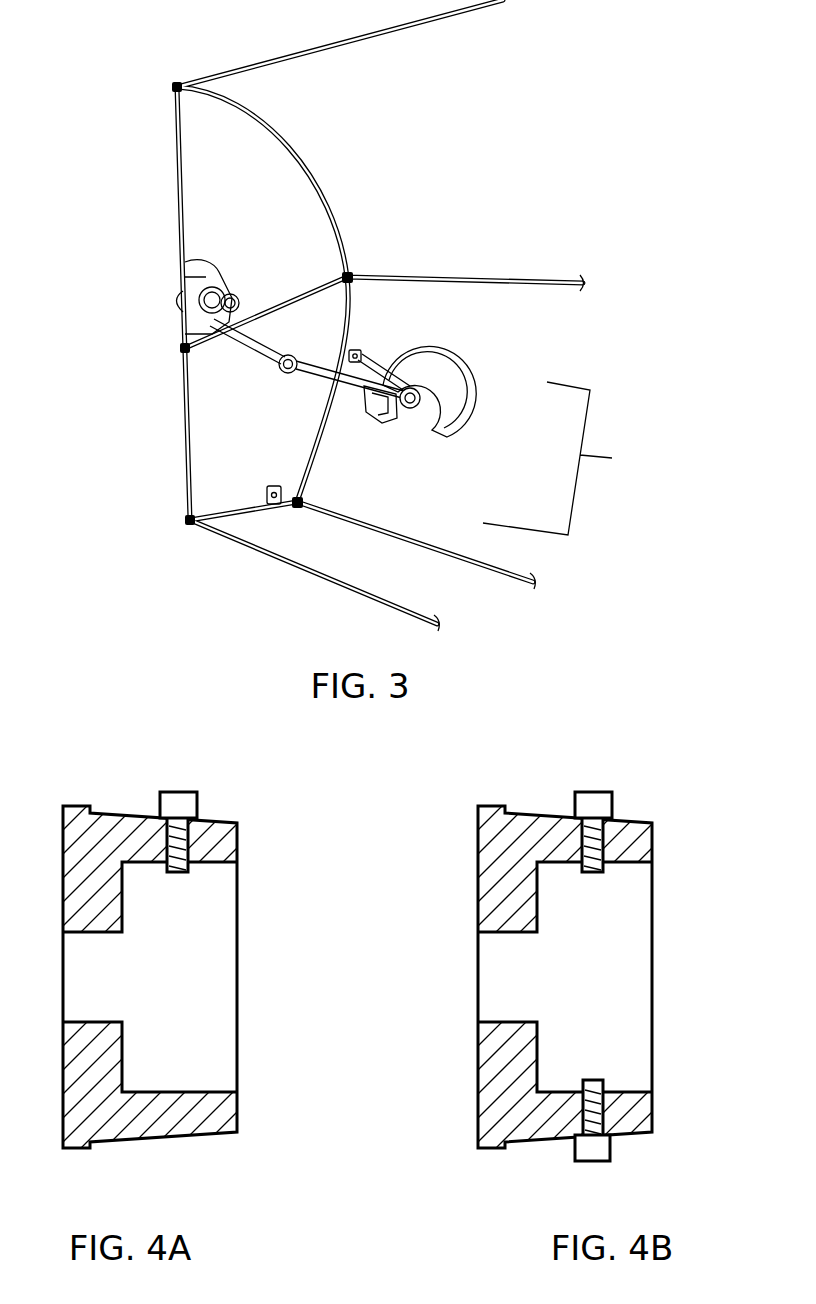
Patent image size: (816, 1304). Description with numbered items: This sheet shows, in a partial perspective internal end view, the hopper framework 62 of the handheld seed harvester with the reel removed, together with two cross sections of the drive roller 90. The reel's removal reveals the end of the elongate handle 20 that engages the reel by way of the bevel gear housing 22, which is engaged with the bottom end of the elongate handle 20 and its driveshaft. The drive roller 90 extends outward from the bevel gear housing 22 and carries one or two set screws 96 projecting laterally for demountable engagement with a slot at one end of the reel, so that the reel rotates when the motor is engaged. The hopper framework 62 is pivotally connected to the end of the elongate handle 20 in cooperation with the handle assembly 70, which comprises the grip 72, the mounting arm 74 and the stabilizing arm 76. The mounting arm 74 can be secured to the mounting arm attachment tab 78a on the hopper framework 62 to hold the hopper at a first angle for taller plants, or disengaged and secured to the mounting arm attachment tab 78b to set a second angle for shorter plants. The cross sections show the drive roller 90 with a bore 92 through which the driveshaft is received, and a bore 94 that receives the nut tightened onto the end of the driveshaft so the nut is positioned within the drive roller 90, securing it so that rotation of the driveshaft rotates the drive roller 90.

In FIG. 3, the hopper framework 62 is at (175, 145).
In FIG. 3, the bevel gear housing 22 is at (196, 275).
In FIG. 3, the drive roller 90 is at (214, 323).
In FIG. 4A, the drive roller 90 is at (115, 812).
In FIG. 4B, the drive roller 90 is at (530, 812).
In FIG. 3, the elongate handle 20 is at (257, 356).
In FIG. 3, the mounting arm attachment tab 78a is at (360, 350).
In FIG. 3, the mounting arm attachment tab 78b is at (265, 495).
In FIG. 3, the handle assembly 70 is at (498, 420).
In FIG. 3, the mounting arm 74 is at (468, 403).
In FIG. 3, the grip 72 is at (447, 437).
In FIG. 3, the stabilizing arm 76 is at (358, 392).
In FIG. 4A, the set screw 96 is at (181, 792).
In FIG. 4B, the set screw 96 is at (596, 792).
In FIG. 4A, the bore 94 is at (220, 932).
In FIG. 4B, the bore 94 is at (635, 932).
In FIG. 4A, the bore 92 is at (78, 975).
In FIG. 4B, the bore 92 is at (493, 975).